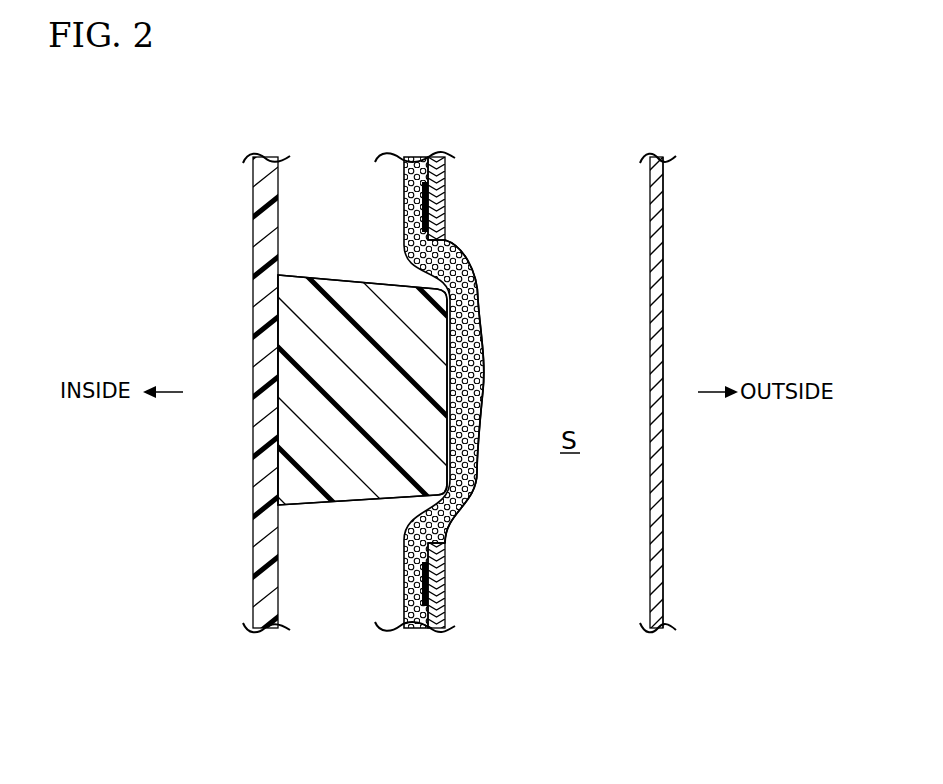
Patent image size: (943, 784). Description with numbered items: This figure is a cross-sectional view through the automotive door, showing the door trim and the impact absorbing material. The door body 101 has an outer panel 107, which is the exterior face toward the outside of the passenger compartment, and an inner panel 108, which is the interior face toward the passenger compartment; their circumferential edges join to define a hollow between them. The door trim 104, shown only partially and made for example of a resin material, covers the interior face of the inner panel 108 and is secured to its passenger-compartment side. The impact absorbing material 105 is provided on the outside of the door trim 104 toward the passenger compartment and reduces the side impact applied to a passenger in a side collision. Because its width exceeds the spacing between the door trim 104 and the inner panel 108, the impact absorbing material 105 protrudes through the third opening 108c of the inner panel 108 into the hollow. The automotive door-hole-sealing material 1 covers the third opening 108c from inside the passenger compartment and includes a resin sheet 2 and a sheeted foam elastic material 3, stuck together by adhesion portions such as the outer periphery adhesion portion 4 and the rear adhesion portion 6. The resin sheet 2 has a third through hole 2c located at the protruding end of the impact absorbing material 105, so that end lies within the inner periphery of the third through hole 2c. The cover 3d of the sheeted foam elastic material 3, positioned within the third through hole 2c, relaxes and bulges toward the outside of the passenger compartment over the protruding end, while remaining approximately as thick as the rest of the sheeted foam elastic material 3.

The automotive door-hole-sealing material 1 is at (428, 402).
The resin sheet 2 is at (446, 630).
The third through hole 2c is at (442, 250).
The sheeted foam elastic material 3 is at (443, 377).
The cover 3d is at (482, 388).
The outer periphery adhesion portion 4 is at (425, 629).
The rear adhesion portion 6 is at (420, 157).
The door body 101 is at (663, 186).
The door trim 104 is at (253, 198).
The impact absorbing material 105 is at (330, 506).
The outer panel 107 is at (663, 463).
The inner panel 108 is at (446, 173).
The third opening 108c is at (446, 541).